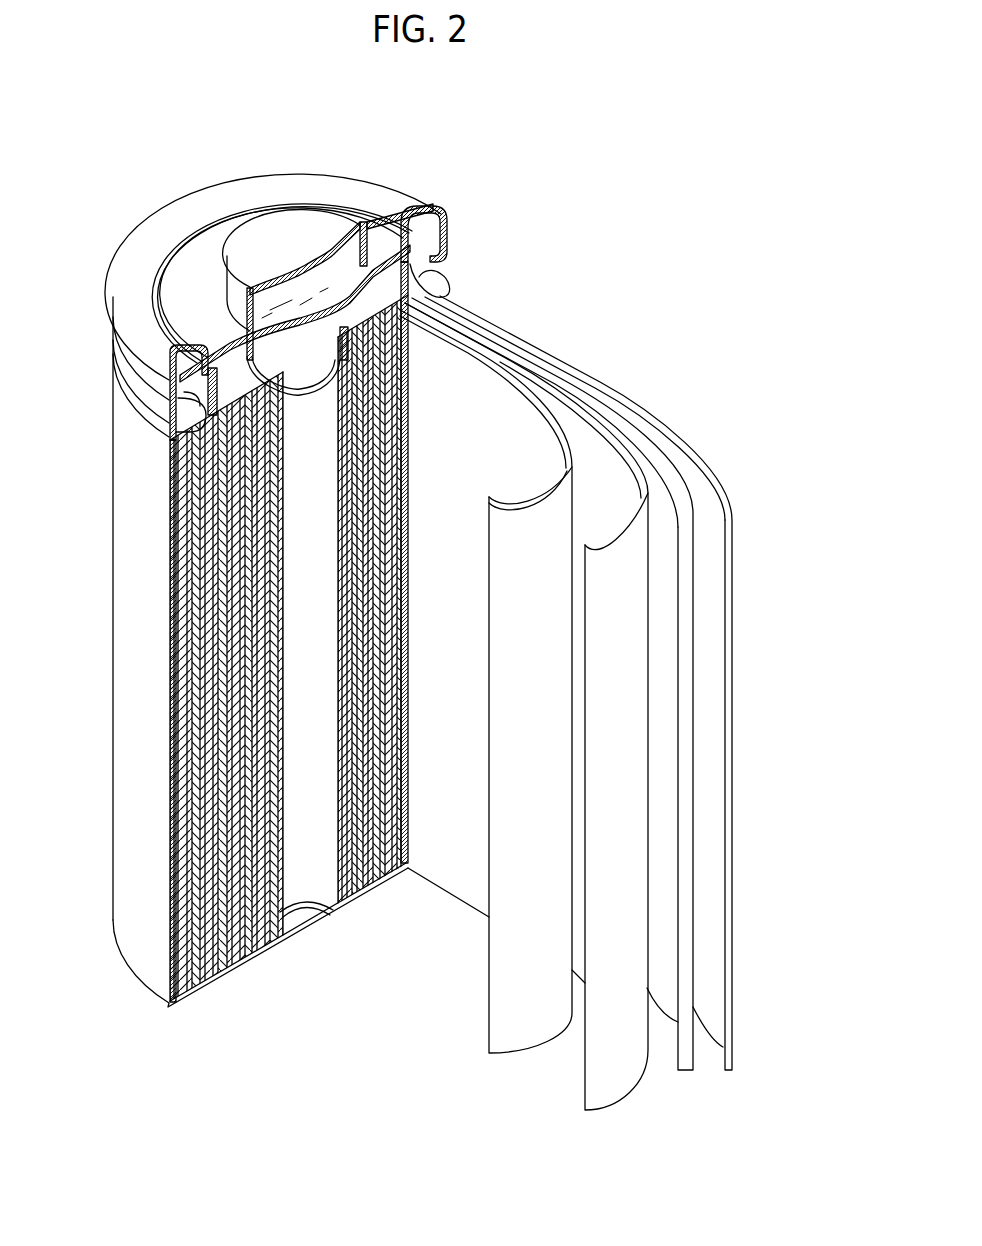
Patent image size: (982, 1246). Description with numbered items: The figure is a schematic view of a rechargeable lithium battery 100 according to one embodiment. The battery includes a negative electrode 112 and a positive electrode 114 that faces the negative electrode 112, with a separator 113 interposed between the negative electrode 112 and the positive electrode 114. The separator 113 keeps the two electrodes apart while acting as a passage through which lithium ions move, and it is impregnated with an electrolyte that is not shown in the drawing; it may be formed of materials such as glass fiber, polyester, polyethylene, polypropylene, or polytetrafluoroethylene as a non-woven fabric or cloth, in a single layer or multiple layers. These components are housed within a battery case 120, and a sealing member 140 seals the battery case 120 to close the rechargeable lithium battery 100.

The rechargeable lithium battery 100 is at (444, 167).
The negative electrode 112 is at (697, 453).
The separator 113 is at (463, 367).
The positive electrode 114 is at (587, 423).
The battery case 120 is at (120, 640).
The sealing member 140 is at (263, 228).